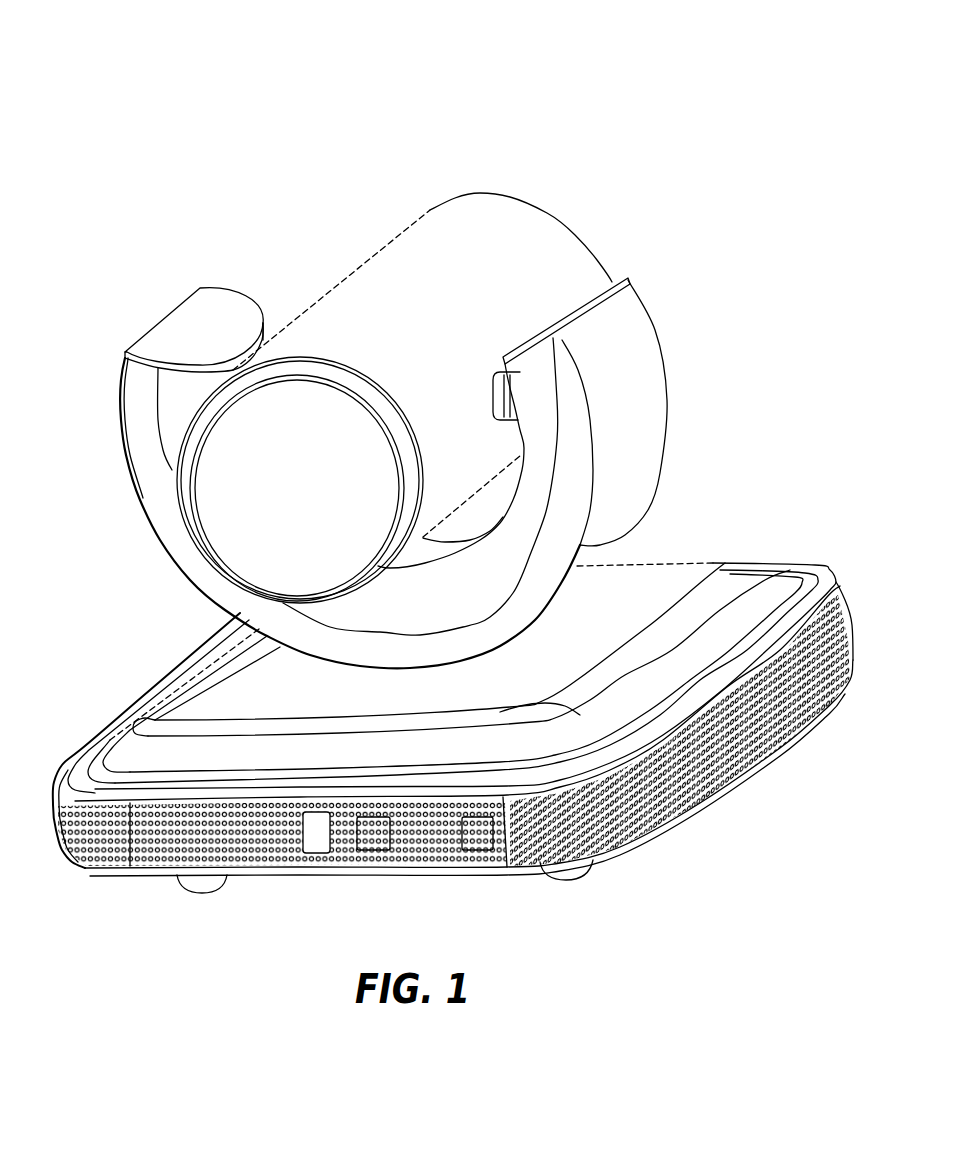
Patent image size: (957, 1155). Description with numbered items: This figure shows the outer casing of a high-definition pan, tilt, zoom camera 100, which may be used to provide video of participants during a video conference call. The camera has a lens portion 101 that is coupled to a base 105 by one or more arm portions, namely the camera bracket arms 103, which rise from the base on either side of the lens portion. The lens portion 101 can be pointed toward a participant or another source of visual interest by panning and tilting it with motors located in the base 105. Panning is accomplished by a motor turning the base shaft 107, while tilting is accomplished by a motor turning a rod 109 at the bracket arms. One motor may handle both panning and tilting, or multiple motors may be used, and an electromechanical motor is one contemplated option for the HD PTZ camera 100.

The HD pan, tilt, zoom (PTZ) camera 100 is at (750, 124).
The lens portion 101 is at (463, 247).
The camera bracket arms 103 is at (623, 333).
The base 105 is at (673, 593).
The base shaft 107 is at (590, 527).
The rod 109 is at (507, 400).